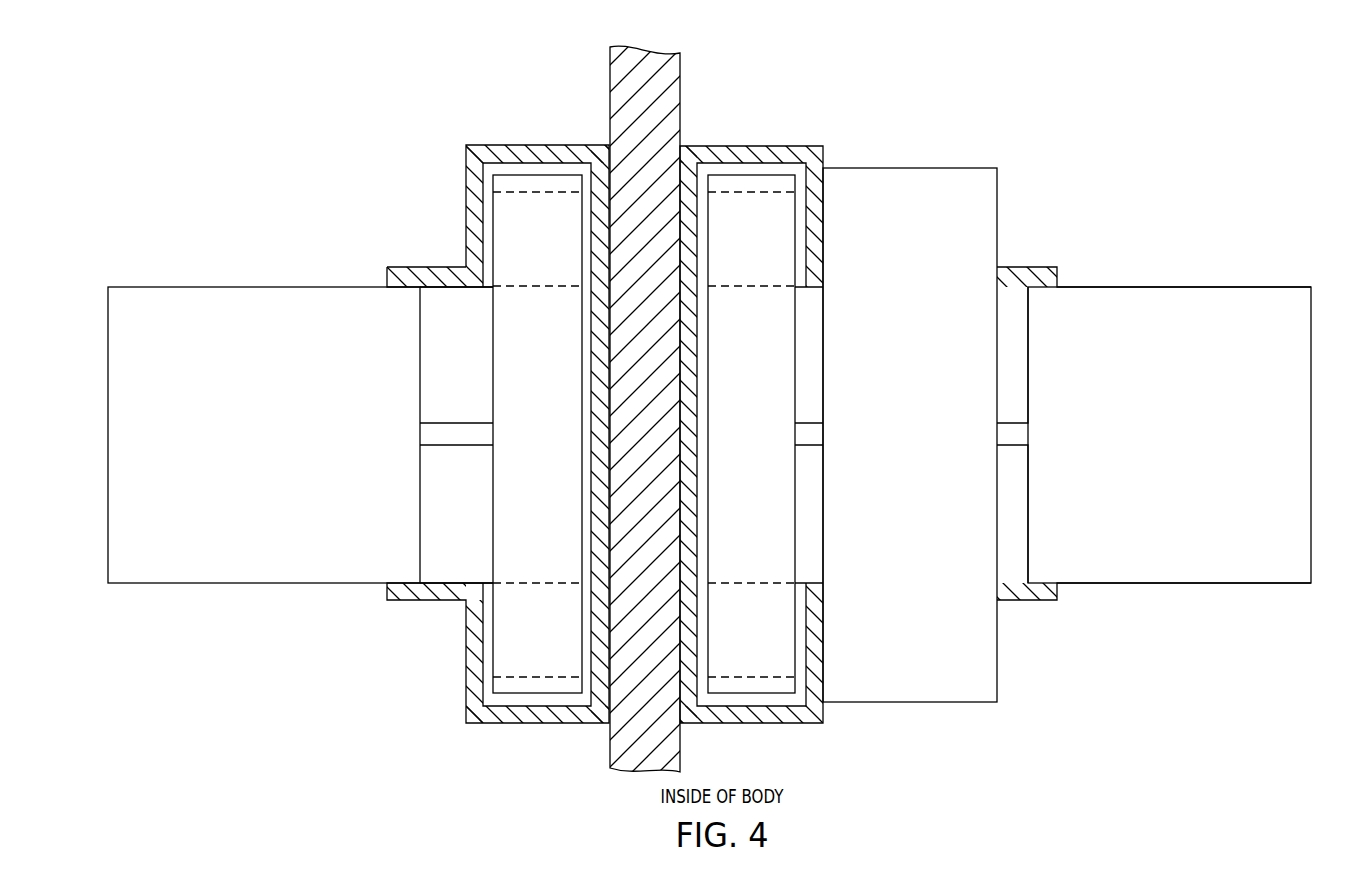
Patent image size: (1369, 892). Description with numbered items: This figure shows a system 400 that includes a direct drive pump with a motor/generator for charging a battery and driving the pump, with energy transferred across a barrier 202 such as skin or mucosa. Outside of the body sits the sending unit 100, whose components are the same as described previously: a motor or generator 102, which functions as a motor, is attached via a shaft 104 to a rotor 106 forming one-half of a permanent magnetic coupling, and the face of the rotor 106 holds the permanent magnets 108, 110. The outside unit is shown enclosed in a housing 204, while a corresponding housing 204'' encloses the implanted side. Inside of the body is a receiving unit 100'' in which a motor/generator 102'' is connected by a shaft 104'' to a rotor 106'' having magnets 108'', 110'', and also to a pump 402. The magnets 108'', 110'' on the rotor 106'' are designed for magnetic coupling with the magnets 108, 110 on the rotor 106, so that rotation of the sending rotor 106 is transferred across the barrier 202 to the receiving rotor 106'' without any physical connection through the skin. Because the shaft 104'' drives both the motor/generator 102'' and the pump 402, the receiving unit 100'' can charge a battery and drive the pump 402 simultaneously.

The system 400 is at (198, 94).
The barrier 202 is at (625, 74).
The assembly 100 is at (354, 438).
The receiving unit 100'' is at (995, 429).
The motor or generator 102 is at (264, 413).
The motor/generator 102'' is at (1169, 412).
The shaft 104 is at (455, 461).
The shaft 104'' is at (911, 435).
The rotor 106 is at (511, 438).
The rotor 106'' is at (791, 439).
The permanent magnet 108 is at (537, 677).
The magnet 108'' is at (751, 196).
The permanent magnet 110 is at (537, 195).
The magnet 110'' is at (751, 677).
The housing 204 is at (498, 458).
The housing 204'' is at (995, 409).
The pump 402 is at (968, 178).